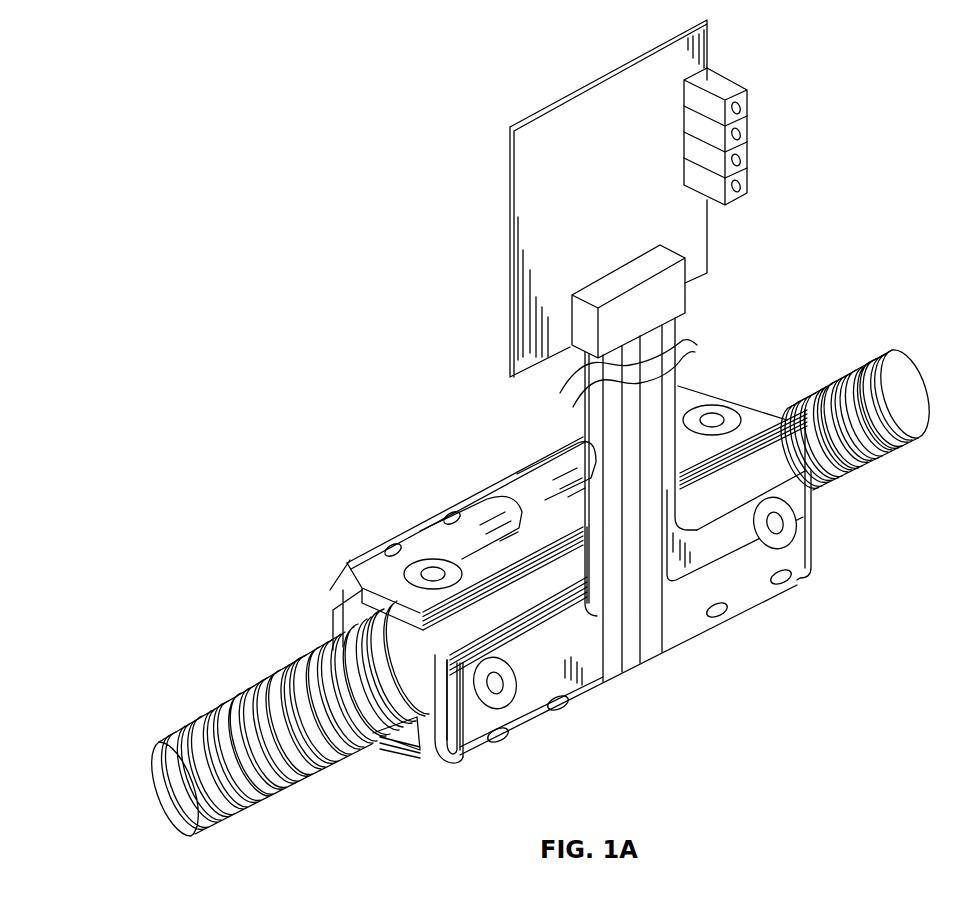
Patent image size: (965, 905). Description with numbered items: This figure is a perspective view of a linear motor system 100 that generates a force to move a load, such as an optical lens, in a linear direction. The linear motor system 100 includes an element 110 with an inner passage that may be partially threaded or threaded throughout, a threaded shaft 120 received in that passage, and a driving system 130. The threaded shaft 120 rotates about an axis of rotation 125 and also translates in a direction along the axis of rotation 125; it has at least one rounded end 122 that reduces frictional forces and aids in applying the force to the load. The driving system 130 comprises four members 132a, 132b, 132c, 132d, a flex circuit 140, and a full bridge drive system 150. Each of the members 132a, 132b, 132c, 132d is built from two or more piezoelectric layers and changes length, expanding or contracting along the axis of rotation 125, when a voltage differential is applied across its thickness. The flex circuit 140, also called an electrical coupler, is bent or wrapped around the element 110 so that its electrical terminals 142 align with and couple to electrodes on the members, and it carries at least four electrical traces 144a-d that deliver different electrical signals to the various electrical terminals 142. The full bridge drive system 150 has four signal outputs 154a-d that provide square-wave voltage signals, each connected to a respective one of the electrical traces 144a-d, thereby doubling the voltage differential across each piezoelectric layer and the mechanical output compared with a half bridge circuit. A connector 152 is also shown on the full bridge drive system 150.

The linear motor system 100 is at (302, 65).
The element with a threaded passage 110 is at (760, 462).
The threaded shaft 120 is at (875, 365).
The rounded end 122 is at (165, 767).
The axis of rotation 125 is at (139, 817).
The driving system 130 is at (476, 435).
The member 132a is at (343, 584).
The member 132b is at (464, 733).
The member 132c is at (402, 786).
The member 132d is at (330, 624).
The flex circuit 140 is at (753, 567).
The electrical terminals 142 is at (432, 570).
The electrical traces 144a-d is at (688, 565).
The full bridge drive system 150 is at (693, 253).
The connector 152 is at (735, 93).
The signal outputs 154a-d is at (685, 324).